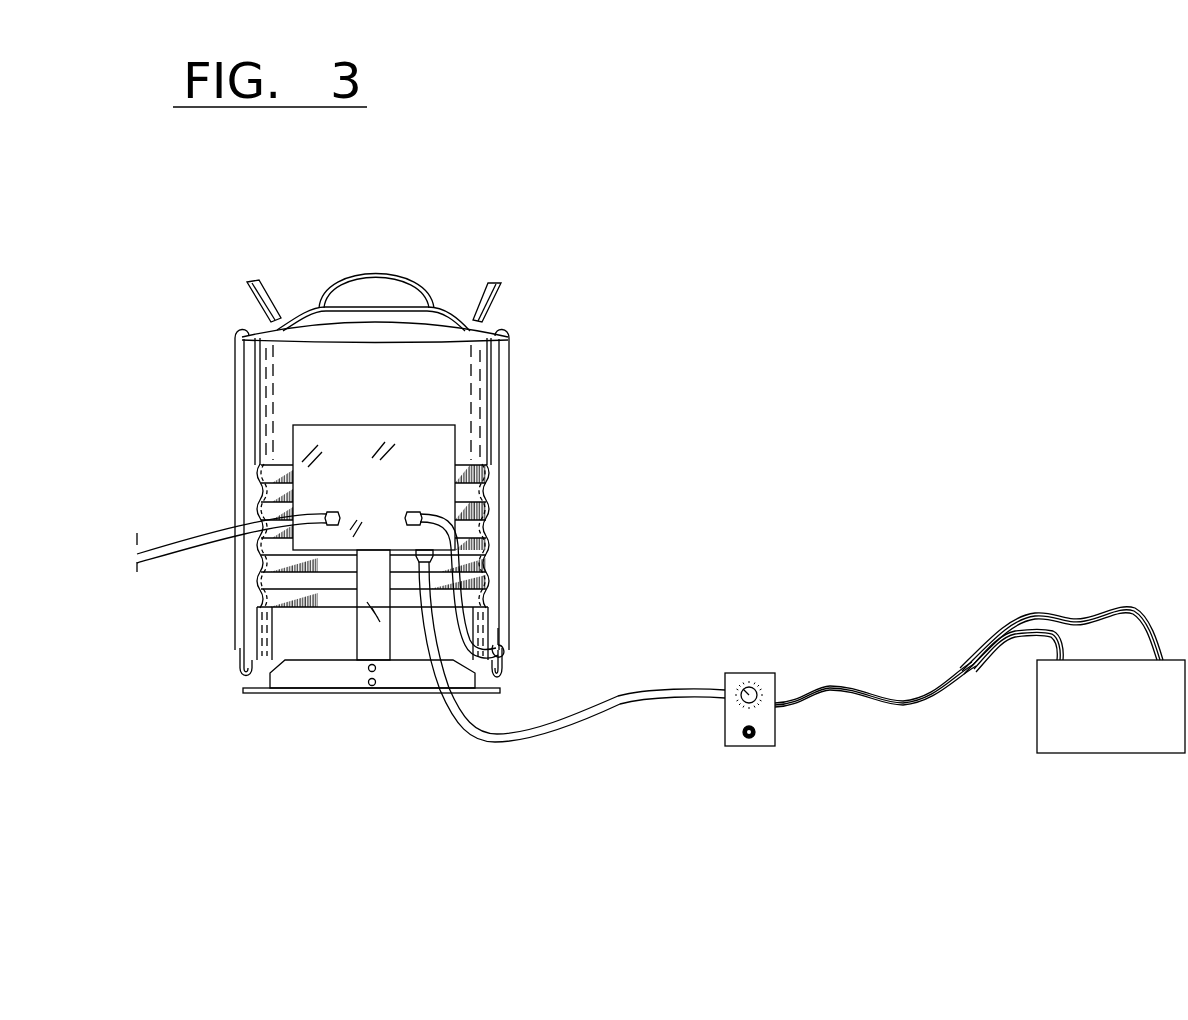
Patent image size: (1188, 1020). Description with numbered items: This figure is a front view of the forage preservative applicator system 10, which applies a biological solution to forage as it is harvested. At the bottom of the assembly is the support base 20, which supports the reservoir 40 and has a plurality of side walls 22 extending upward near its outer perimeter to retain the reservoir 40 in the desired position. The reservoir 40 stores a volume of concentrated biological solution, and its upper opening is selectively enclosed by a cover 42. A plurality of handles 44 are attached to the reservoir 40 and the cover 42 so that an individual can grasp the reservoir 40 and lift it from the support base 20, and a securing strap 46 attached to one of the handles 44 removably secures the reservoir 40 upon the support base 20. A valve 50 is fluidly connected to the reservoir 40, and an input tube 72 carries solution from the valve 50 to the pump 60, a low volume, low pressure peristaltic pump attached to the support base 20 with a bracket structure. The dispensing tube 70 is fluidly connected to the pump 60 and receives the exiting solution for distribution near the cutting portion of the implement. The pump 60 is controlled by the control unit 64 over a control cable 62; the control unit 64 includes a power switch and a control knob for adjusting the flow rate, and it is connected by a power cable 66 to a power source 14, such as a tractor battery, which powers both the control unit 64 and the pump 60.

The forage preservative applicator system 10 is at (947, 214).
The power source 14 is at (1120, 725).
The support base 20 is at (300, 693).
The side walls 22 is at (243, 672).
The reservoir 40 is at (489, 373).
The cover 42 is at (320, 313).
The handles 44 is at (255, 283).
The securing strap 46 is at (242, 378).
The valve 50 is at (505, 645).
The pump 60 is at (418, 468).
The control cable 62 is at (628, 703).
The control unit 64 is at (768, 678).
The power cable 66 is at (903, 703).
The dispensing tube 70 is at (163, 550).
The input tube 72 is at (465, 598).